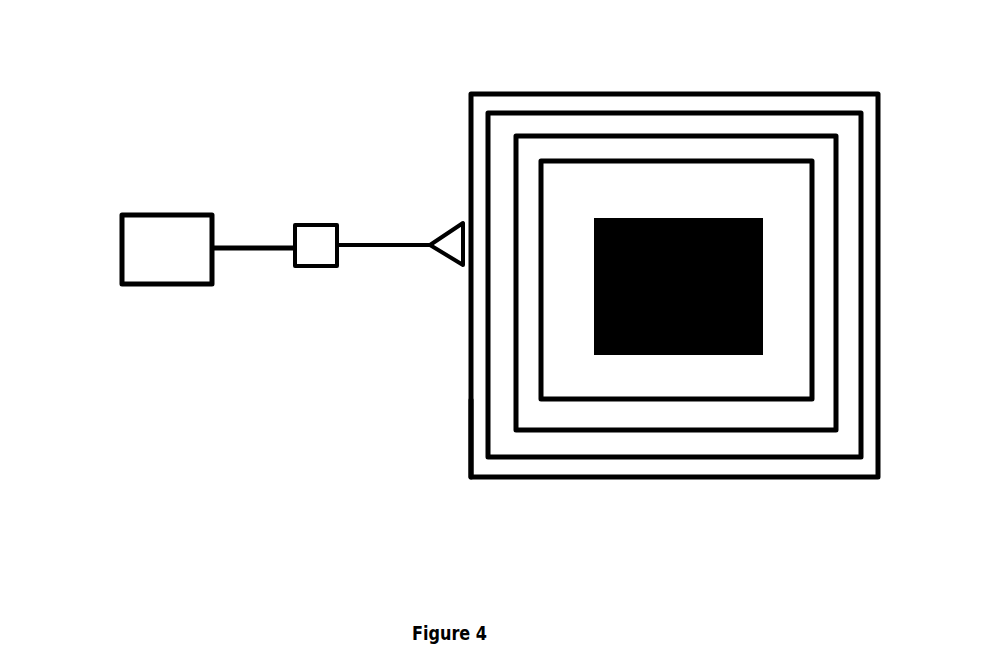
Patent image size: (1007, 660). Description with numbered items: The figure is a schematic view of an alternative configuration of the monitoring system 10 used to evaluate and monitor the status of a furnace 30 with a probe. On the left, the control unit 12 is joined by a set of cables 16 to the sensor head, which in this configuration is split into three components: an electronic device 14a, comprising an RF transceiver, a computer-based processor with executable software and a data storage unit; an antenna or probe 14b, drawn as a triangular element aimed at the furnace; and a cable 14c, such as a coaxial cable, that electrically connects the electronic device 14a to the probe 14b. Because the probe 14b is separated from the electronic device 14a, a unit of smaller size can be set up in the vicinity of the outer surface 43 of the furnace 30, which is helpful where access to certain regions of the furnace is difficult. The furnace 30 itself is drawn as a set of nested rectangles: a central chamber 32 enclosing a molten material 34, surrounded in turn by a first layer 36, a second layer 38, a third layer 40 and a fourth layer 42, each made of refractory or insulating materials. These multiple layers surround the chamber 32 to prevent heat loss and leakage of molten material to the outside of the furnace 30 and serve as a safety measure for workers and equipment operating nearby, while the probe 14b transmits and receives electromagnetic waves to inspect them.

The monitoring system 10 is at (172, 157).
The control unit 12 is at (118, 243).
The electronic device 14a is at (317, 272).
The probe 14b is at (453, 260).
The cable 14c is at (377, 250).
The set of cables 16 is at (258, 222).
The furnace 30 is at (666, 85).
The chamber 32 is at (672, 355).
The molten material 34 is at (728, 355).
The first layer 36 is at (558, 373).
The second layer 38 is at (528, 187).
The third layer 40 is at (503, 135).
The fourth layer 42 is at (520, 100).
The outer surface 43 is at (467, 462).